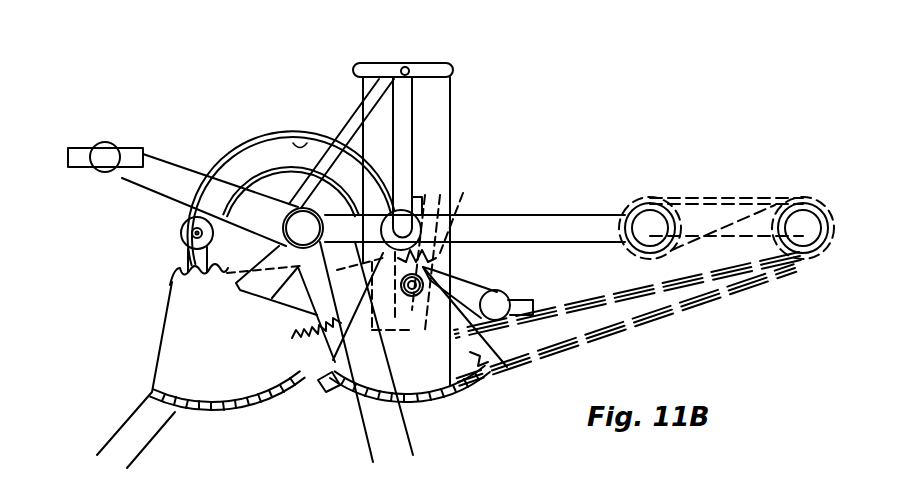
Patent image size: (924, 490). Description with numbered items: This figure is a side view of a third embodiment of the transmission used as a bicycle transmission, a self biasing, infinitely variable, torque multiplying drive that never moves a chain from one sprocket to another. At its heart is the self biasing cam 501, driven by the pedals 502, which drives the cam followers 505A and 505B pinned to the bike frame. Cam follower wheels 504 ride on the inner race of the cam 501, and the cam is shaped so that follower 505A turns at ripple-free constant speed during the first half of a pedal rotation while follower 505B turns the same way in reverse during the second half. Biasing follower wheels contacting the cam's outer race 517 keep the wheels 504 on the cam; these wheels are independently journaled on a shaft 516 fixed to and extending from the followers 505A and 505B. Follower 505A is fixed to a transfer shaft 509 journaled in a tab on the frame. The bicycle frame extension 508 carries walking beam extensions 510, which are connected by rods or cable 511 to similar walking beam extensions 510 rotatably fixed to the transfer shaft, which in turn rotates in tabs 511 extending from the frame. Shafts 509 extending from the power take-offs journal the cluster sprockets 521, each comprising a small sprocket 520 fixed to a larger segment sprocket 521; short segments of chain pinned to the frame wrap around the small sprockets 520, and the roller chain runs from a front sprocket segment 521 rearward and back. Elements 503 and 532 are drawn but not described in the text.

The self biasing cam 501 is at (260, 150).
The pedals 502 is at (165, 174).
The cable 503 is at (457, 208).
The cam follower wheels 504 is at (185, 226).
The cam follower 505A is at (185, 258).
The cam follower 505B is at (393, 112).
The bicycle frame extension 508 is at (383, 107).
The transfer shaft 509 is at (410, 67).
The walking beam extensions 510 is at (380, 66).
The rods or cable 511 is at (363, 135).
The shaft 516 is at (420, 198).
The cam outer race 517 is at (240, 148).
The small sprockets 520 is at (427, 263).
The cluster sprockets 521 is at (192, 357).
The junction 532 is at (330, 375).